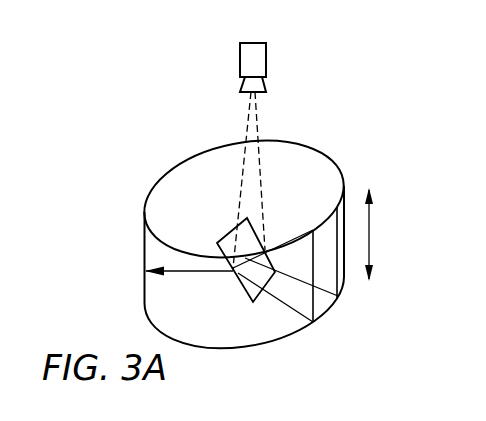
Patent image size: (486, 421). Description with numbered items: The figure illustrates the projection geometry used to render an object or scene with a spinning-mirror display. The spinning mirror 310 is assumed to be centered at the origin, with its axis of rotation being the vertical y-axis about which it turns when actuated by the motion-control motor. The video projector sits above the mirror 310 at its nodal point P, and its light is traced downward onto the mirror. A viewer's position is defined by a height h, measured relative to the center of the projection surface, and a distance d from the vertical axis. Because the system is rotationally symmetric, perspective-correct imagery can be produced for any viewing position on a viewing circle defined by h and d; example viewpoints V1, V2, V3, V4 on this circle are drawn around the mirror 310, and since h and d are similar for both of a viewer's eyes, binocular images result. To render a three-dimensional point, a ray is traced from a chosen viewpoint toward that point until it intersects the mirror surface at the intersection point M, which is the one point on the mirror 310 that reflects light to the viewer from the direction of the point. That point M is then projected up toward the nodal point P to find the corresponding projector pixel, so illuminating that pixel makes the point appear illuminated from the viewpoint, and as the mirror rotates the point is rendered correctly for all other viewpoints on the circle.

The spinning mirror 310 is at (221, 241).
The nodal point of the video projector P is at (296, 155).
The intersection point on the mirror M is at (252, 272).
The distance d is at (180, 270).
The height h is at (404, 234).
The viewpoint on the viewing circle V1 is at (345, 156).
The viewpoint on the viewing circle V2 is at (359, 189).
The viewpoint on the viewing circle V3 is at (322, 196).
The viewpoint on the viewing circle V4 is at (299, 221).